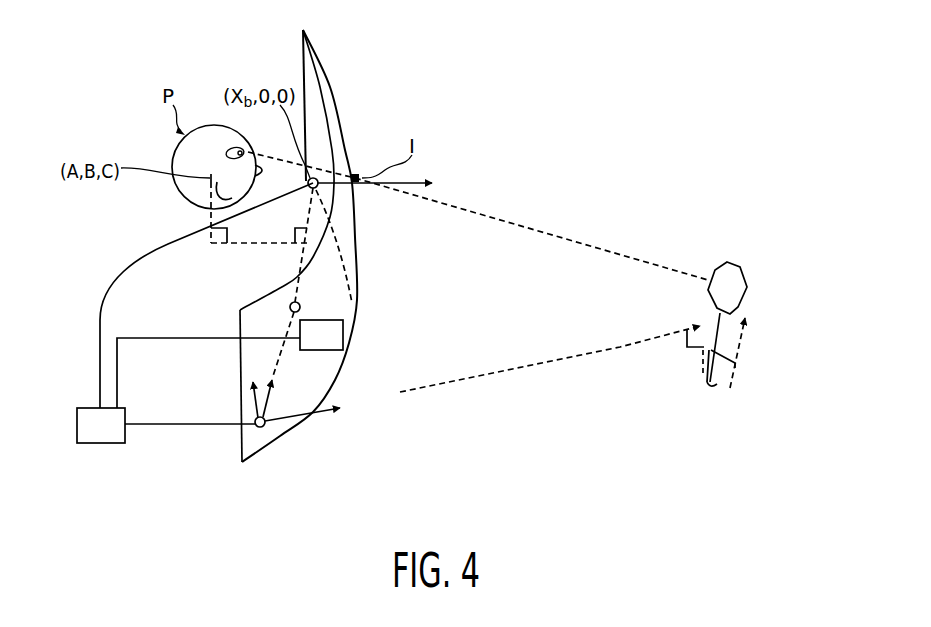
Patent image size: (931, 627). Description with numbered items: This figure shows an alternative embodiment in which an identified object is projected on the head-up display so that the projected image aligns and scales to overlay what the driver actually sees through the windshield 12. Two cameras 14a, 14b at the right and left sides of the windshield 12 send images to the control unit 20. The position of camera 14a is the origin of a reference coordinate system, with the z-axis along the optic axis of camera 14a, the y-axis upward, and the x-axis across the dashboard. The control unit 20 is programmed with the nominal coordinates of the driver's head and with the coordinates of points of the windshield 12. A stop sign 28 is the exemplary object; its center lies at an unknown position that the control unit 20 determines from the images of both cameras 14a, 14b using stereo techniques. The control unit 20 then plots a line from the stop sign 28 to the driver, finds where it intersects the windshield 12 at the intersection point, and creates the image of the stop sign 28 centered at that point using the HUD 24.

The windshield 12 is at (257, 298).
The camera 14a is at (262, 428).
The camera 14b is at (318, 176).
The control unit 20 is at (101, 443).
The HUD 24 is at (343, 328).
The stop sign 28 is at (738, 262).